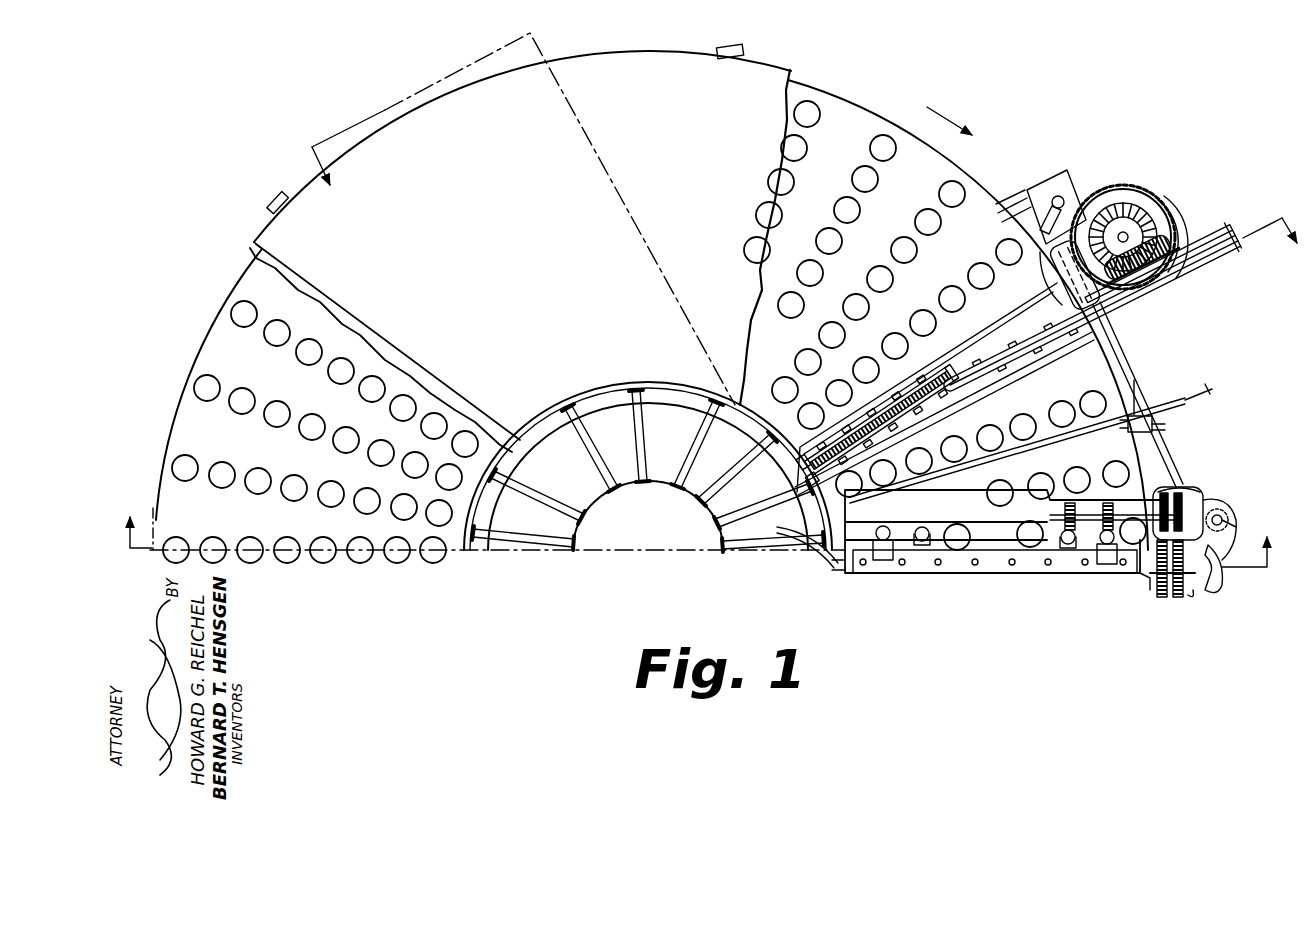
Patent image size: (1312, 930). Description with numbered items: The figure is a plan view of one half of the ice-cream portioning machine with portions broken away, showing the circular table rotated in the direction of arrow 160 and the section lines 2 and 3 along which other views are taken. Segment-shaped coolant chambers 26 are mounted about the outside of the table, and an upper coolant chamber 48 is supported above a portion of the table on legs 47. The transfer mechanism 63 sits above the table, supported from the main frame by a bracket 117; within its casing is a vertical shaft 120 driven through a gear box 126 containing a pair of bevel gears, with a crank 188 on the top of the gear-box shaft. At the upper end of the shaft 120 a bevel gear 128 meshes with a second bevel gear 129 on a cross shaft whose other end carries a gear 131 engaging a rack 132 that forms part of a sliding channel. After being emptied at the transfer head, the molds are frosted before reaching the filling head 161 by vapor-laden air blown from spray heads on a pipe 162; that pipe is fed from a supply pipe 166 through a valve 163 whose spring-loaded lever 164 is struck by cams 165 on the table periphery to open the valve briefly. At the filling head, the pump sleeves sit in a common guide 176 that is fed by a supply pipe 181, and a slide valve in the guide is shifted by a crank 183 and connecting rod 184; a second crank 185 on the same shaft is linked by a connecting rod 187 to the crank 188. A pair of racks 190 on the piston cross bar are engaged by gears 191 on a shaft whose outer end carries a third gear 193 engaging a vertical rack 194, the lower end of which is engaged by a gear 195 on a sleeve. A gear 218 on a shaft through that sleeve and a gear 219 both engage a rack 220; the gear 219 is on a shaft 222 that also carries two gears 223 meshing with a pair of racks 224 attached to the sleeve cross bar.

The section line 2- 2 is at (695, 554).
The section line 3- 3 is at (795, 176).
The coolant chambers 26 is at (290, 391).
The legs 47 is at (284, 200).
The upper coolant chamber 48 is at (544, 269).
The transfer mechanism 63 is at (1022, 356).
The bracket 117 is at (1056, 266).
The shaft 120 is at (1127, 234).
The gear box 126 is at (1076, 180).
The bevel gear 128 is at (1168, 228).
The second bevel gear 129 is at (1173, 248).
The gear 131 is at (1168, 288).
The rack 132 is at (1188, 250).
The arrow 160 is at (955, 116).
The filling head 161 is at (954, 570).
The pipe 162 is at (1046, 426).
The valve 163 is at (1144, 415).
The lever 164 is at (1165, 428).
The cams 165 is at (1134, 380).
The pipe 166 is at (1196, 392).
The guide 176 is at (1086, 576).
The supply pipe 181 is at (838, 572).
The crank 183 is at (1214, 590).
The connecting rod 184 is at (1164, 598).
The second crank 185 is at (1240, 527).
The connecting rod 187 is at (1192, 488).
The crank 188 is at (1045, 213).
The racks 190 is at (883, 526).
The gears 191 is at (1098, 514).
The third gear 193 is at (1166, 472).
The vertical rack 194 is at (1210, 495).
The gear 195 is at (1146, 580).
The gear 218 is at (1190, 600).
The gear 219 is at (1229, 517).
The rack 220 is at (1236, 512).
The shaft 222 is at (1128, 428).
The gears 223 is at (1066, 502).
The racks 224 is at (925, 527).